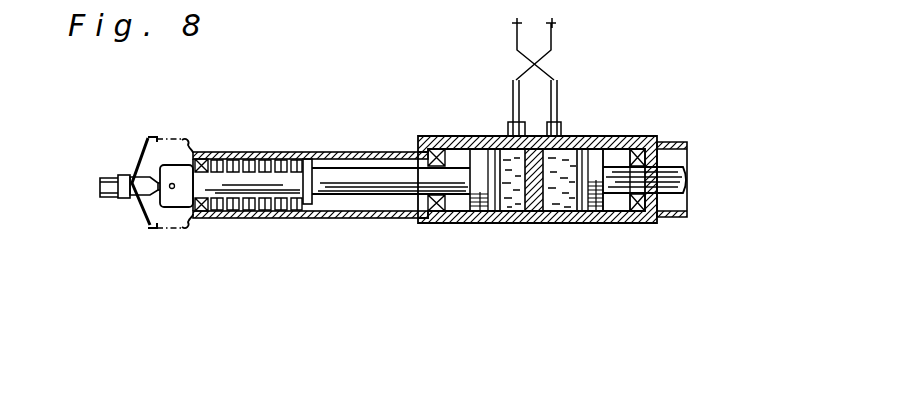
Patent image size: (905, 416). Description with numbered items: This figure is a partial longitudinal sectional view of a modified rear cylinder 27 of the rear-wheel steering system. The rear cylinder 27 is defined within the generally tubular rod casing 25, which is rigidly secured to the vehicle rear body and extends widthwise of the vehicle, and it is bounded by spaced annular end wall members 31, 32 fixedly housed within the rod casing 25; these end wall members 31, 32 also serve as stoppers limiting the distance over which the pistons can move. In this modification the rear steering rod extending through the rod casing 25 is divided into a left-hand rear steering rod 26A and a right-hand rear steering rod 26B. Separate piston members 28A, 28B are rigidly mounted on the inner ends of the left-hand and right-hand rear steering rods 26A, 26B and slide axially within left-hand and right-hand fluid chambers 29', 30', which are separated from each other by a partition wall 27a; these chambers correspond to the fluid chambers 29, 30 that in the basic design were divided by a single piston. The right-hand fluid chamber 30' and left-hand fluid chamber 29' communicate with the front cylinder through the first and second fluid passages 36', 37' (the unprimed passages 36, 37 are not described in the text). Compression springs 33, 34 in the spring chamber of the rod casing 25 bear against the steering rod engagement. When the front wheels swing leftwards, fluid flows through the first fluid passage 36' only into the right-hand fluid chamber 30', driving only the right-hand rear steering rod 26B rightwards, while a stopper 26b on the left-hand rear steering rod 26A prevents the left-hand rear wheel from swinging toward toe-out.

The rod casing 25 is at (290, 152).
The left-hand rear steering rod 26A is at (343, 180).
The right-hand rear steering rod 26B is at (672, 178).
The stopper 26b is at (190, 190).
The rear cylinder 27 is at (527, 182).
The partition wall 27a is at (587, 136).
The piston member 28A is at (480, 200).
The piston member 28B is at (595, 185).
The left-hand fluid chamber 29 is at (469, 143).
The left-hand fluid chamber 29' is at (469, 143).
The right-hand fluid chamber 30 is at (547, 208).
The right-hand fluid chamber 30' is at (547, 208).
The annular end wall member 31 is at (438, 204).
The annular end wall member 32 is at (637, 205).
The compression spring 33 is at (241, 248).
The compression spring 34 is at (245, 207).
The fluid line 36 is at (485, 42).
The first fluid passage 36' is at (485, 42).
The fluid line 37 is at (594, 41).
The second fluid passage 37' is at (594, 41).